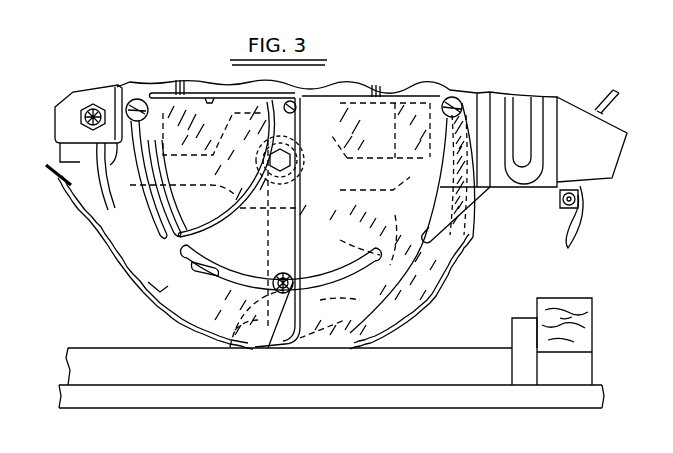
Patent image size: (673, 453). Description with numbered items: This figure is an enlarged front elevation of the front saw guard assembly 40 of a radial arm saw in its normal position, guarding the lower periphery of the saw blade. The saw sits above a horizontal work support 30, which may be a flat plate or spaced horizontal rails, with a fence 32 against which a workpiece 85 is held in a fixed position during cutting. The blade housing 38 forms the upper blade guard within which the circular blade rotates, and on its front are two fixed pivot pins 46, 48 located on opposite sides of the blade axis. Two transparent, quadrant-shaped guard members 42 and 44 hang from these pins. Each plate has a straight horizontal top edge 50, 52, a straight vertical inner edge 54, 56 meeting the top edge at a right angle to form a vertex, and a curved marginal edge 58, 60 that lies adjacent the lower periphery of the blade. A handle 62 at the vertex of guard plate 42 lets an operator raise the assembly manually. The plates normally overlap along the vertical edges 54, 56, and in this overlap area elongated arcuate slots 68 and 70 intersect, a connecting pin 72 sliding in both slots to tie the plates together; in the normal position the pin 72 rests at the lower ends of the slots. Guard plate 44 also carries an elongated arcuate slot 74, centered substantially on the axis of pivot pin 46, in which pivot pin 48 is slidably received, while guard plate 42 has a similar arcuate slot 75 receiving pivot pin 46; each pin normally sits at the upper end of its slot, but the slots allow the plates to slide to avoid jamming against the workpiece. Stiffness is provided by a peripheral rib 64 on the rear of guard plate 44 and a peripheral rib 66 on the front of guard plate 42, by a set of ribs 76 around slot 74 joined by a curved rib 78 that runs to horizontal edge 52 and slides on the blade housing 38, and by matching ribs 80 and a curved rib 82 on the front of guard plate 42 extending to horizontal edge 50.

The work support 30 is at (100, 367).
The fence 32 is at (523, 333).
The blade housing 38 is at (67, 108).
The front saw guard assembly 40 is at (126, 285).
The guard member 42 is at (190, 83).
The guard member 44 is at (367, 120).
The pivot pin 46 is at (128, 101).
The pivot pin 48 is at (459, 102).
The horizontal top edge 50 is at (230, 97).
The horizontal top edge 52 is at (340, 92).
The vertical inner edge 54 is at (320, 352).
The vertical inner edge 56 is at (230, 348).
The curved marginal edge 58 is at (130, 252).
The curved marginal edge 60 is at (436, 290).
The handle 62 is at (333, 97).
The peripheral rib 64 is at (427, 90).
The peripheral rib 66 is at (193, 113).
The elongated arcuate slot 68 is at (203, 269).
The elongated arcuate slot 70 is at (338, 277).
The connecting pin 72 is at (268, 349).
The elongated arcuate slot 74 is at (430, 240).
The elongated arcuate slot 75 is at (125, 180).
The set of ribs 76 is at (470, 207).
The curved rib 78 is at (410, 318).
The set of ribs 80 is at (160, 200).
The curved rib 82 is at (150, 285).
The workpiece 85 is at (557, 320).